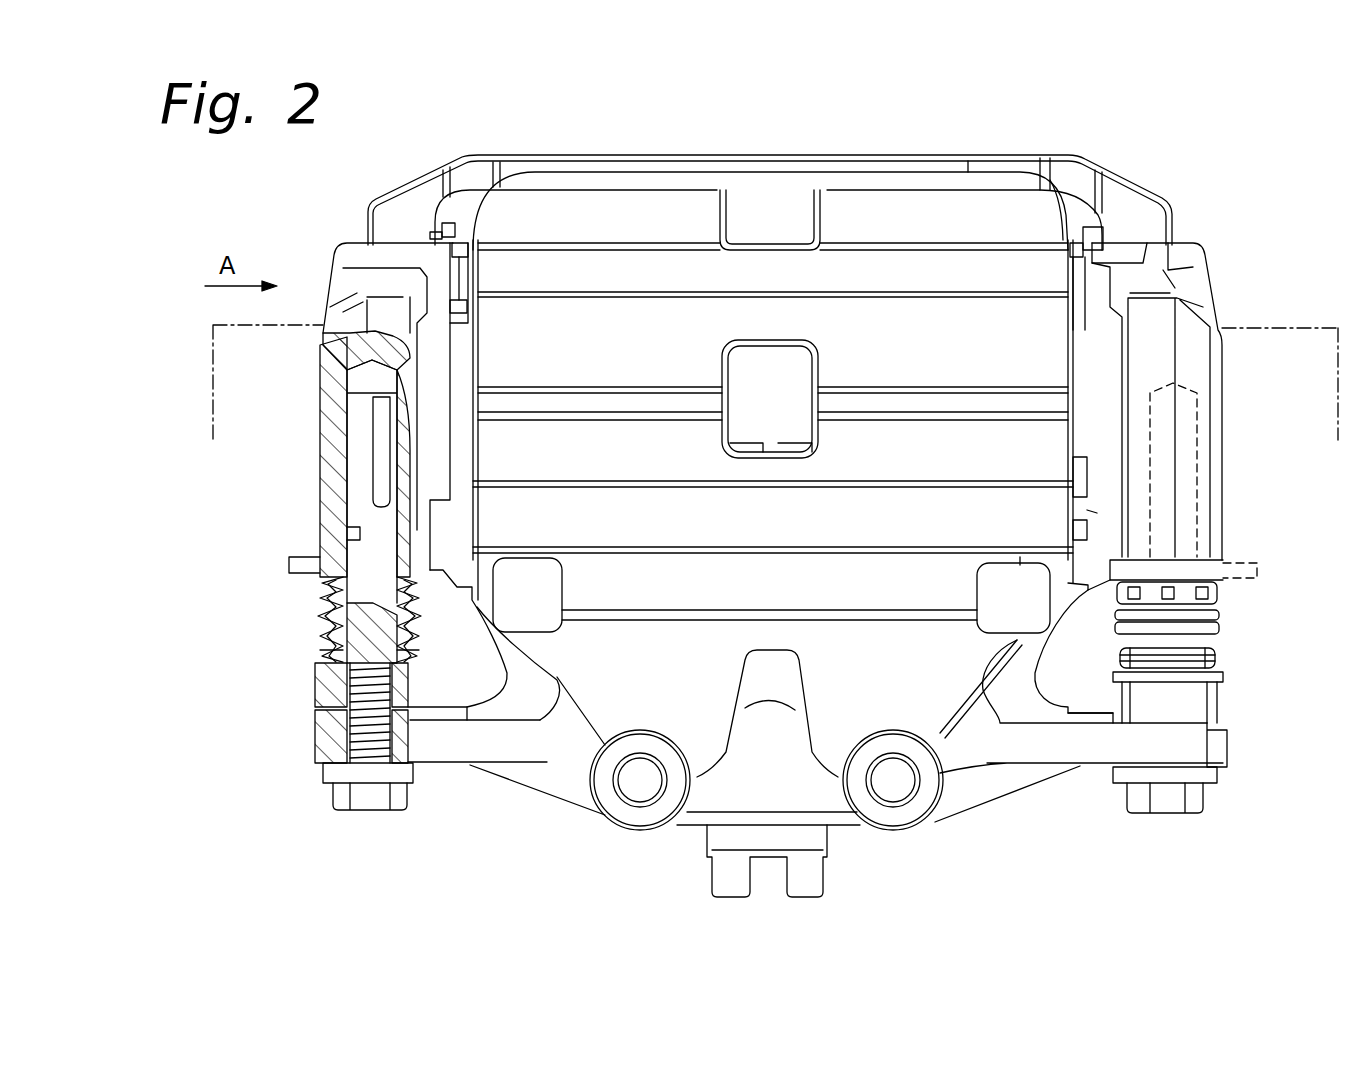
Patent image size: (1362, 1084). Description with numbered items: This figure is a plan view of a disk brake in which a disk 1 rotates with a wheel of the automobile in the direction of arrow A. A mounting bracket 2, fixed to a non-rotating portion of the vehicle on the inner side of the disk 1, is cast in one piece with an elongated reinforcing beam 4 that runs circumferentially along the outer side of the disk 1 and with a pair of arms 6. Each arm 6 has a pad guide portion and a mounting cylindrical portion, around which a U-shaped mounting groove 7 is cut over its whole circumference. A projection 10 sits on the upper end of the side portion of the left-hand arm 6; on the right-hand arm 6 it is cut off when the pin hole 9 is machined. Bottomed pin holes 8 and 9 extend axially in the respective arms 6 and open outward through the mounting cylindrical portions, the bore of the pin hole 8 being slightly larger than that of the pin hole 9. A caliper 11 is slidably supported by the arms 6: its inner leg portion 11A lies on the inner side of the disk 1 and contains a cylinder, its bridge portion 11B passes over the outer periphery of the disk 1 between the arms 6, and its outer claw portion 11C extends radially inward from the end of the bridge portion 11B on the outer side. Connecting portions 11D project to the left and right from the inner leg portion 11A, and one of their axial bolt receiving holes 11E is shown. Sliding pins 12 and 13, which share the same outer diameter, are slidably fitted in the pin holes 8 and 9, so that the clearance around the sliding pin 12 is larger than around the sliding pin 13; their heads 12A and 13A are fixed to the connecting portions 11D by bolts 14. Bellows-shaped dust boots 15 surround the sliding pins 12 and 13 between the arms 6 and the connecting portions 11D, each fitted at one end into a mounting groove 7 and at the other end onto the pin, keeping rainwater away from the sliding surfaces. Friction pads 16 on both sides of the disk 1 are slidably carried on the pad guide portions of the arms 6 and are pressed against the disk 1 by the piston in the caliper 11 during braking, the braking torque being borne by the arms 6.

The disk 1 is at (1310, 323).
The mounting bracket 2 is at (1195, 250).
The reinforcing beam 4 is at (722, 168).
The arms 6 is at (320, 511).
The mounting grooves 7 is at (323, 590).
The pin hole 8 is at (340, 543).
The pin hole 9 is at (1190, 476).
The projection 10 is at (287, 571).
The caliper 11 is at (957, 800).
The inner leg portion 11A is at (707, 793).
The bridge portion 11B is at (583, 355).
The outer claw portion 11C is at (898, 210).
The connecting portions 11D is at (463, 748).
The bolt receiving hole 11E is at (323, 764).
The sliding pin 12 is at (357, 456).
The head 12A is at (333, 683).
The sliding pin 13 is at (1187, 548).
The head 13A is at (1207, 707).
The bolts 14 is at (373, 800).
The dust boots 15 is at (323, 637).
The friction pads 16 is at (463, 300).